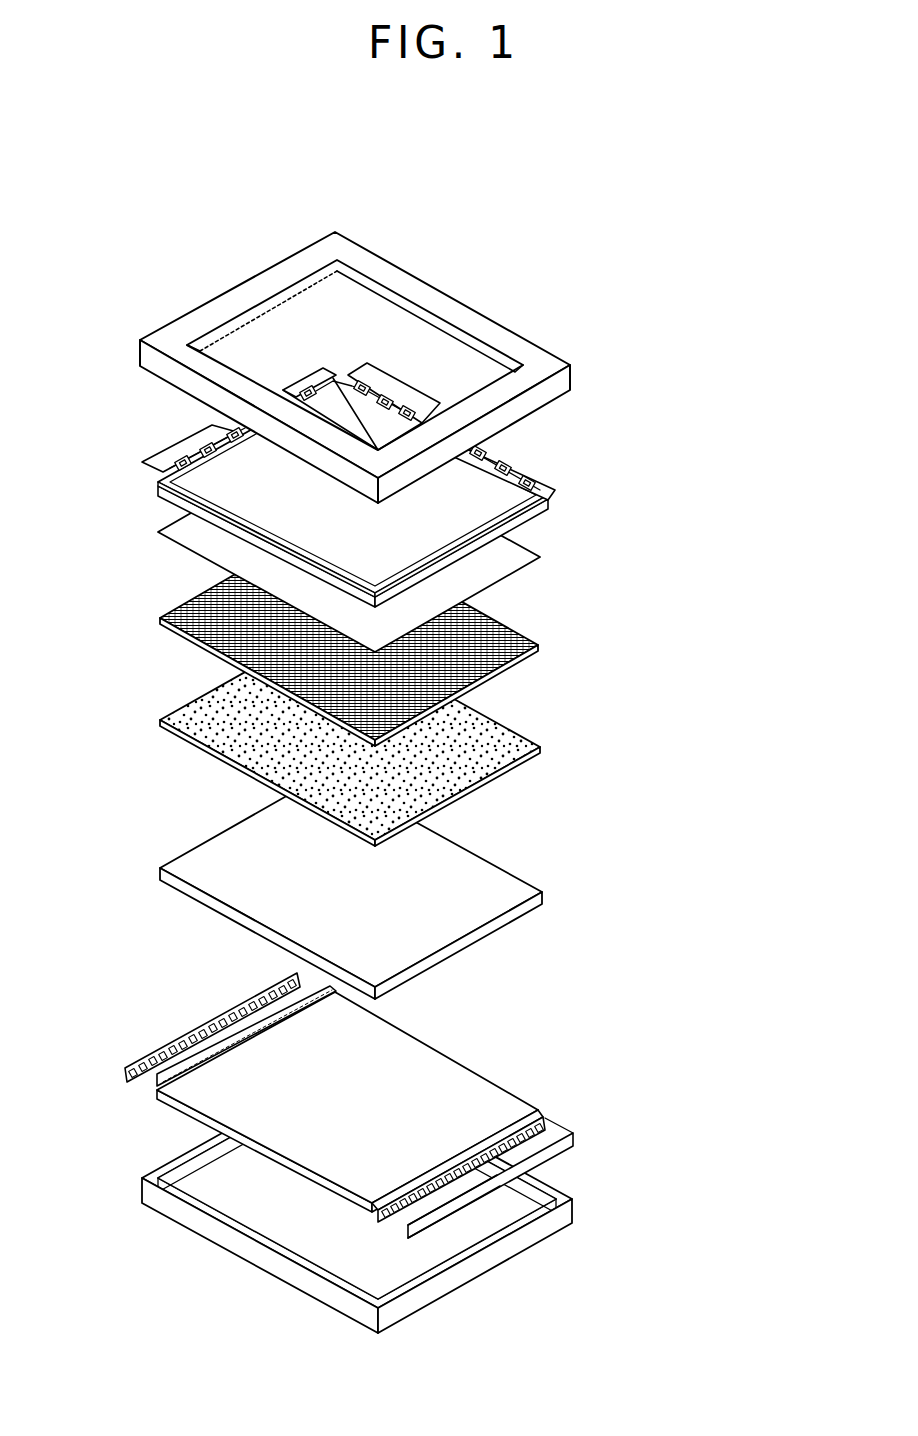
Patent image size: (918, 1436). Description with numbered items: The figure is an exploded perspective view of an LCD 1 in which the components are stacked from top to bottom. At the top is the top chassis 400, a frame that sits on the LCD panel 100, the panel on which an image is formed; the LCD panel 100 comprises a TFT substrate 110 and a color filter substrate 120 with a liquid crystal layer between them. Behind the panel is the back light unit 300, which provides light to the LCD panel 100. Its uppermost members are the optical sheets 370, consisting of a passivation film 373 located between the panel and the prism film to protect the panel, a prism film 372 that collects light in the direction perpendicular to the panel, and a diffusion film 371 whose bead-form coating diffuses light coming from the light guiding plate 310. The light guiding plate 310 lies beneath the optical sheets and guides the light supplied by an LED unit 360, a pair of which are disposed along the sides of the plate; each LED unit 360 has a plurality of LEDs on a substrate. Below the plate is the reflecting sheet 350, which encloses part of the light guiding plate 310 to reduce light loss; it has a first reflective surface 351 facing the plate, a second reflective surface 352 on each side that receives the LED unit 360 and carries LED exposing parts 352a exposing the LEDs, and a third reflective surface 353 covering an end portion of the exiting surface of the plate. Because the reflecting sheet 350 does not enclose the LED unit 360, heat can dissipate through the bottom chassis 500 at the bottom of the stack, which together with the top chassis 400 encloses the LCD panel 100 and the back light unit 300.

The LCD 1 is at (510, 247).
The LCD panel 100 is at (432, 496).
The TFT substrate 110 is at (513, 487).
The color filter substrate 120 is at (552, 505).
The back light unit 300 is at (417, 888).
The light guiding plate 310 is at (542, 892).
The reflecting sheet 350 is at (442, 1166).
The first reflective surface 351 is at (487, 1095).
The second reflective surface 352 is at (536, 1229).
The LED exposing part 352a is at (408, 1203).
The third reflective surface 353 is at (540, 1113).
The LED unit 360 is at (127, 1057).
The optical sheets 370 is at (441, 641).
The diffusion film 371 is at (543, 738).
The prism film 372 is at (538, 643).
The passivation film 373 is at (409, 544).
The top chassis 400 is at (571, 371).
The bottom chassis 500 is at (530, 1245).